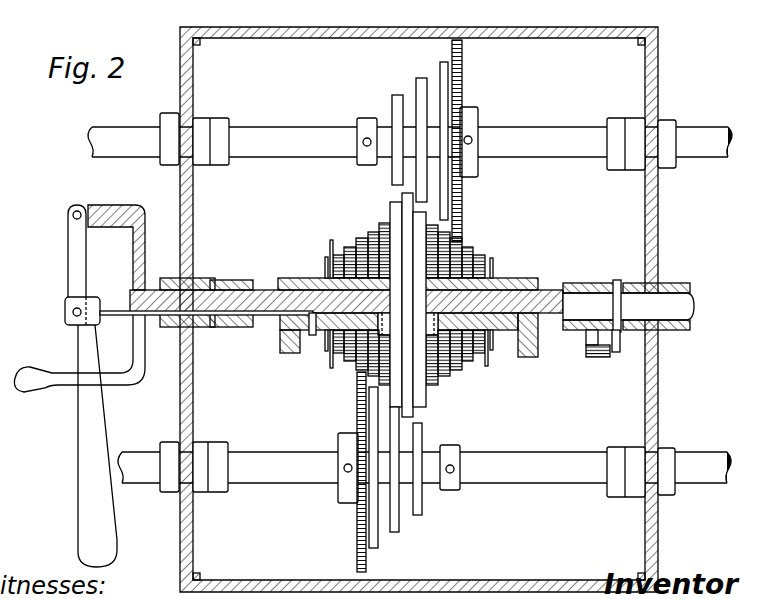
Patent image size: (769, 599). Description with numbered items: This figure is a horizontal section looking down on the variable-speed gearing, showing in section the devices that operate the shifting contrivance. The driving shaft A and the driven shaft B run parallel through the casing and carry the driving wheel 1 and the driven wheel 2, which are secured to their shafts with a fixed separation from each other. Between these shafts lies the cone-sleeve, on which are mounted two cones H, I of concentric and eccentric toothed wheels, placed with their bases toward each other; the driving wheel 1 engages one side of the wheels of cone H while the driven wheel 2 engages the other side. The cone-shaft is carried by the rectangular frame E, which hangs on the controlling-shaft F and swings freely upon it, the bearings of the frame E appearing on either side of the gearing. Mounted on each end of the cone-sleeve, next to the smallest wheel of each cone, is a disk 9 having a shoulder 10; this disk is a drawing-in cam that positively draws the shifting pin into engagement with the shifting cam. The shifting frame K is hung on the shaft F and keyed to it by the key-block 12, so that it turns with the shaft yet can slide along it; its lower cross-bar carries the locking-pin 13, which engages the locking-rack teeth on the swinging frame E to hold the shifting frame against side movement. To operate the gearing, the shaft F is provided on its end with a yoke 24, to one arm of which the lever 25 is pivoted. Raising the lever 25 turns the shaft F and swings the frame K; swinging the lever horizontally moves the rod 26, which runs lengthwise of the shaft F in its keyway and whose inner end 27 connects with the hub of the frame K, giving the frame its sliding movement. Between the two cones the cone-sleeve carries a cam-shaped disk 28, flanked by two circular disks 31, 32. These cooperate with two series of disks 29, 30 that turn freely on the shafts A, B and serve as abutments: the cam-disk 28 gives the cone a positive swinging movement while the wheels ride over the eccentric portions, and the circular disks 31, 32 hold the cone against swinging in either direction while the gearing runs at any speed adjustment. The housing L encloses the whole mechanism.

The driving wheel 1 is at (352, 472).
The driven wheel 2 is at (464, 141).
The disk 9 is at (327, 251).
The shoulder 10 is at (489, 349).
The key-block 12 is at (408, 324).
The locking-pin 13 is at (604, 352).
The yoke 24 is at (79, 289).
The lever 25 is at (82, 386).
The rod 26 is at (110, 310).
The inner end of rod 27 is at (313, 337).
The cam-shaped disk 28 is at (408, 400).
The disks 29 is at (405, 480).
The disks 30 is at (415, 129).
The circular disk 31 is at (393, 207).
The circular disk 32 is at (422, 213).
The driving shaft A is at (424, 470).
The driven shaft B is at (410, 141).
The rectangular frame E is at (250, 275).
The controlling-shaft F is at (275, 284).
The cone H is at (409, 246).
The cone I is at (409, 361).
The shifting frame K is at (528, 345).
The housing L is at (181, 203).